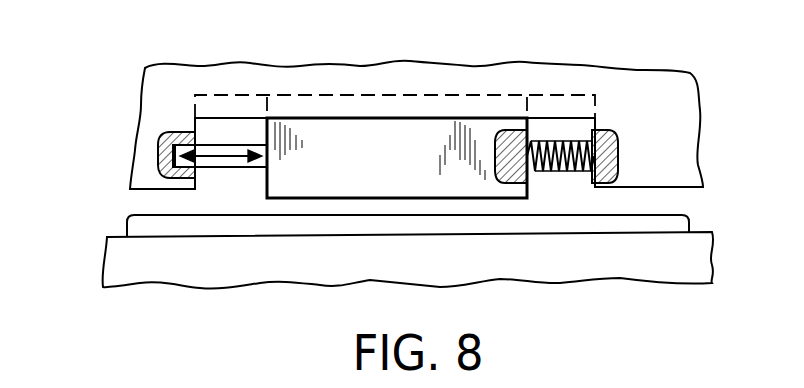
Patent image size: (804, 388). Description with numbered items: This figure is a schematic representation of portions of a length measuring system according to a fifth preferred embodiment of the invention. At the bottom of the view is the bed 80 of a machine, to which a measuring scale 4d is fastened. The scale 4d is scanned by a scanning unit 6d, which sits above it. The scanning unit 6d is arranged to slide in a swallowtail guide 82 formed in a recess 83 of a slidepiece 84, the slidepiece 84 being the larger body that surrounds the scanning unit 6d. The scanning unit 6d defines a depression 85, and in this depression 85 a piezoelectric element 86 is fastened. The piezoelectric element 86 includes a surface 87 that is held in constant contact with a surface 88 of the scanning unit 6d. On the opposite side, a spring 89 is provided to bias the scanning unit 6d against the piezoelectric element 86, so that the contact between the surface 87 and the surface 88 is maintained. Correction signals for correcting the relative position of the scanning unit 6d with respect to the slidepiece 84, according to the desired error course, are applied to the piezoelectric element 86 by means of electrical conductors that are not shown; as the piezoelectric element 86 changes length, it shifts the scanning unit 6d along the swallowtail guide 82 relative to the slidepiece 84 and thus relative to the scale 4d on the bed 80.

The swallowtail guide 82 is at (425, 105).
The slidepiece 84 is at (575, 82).
The recess 83 is at (160, 133).
The depression 85 is at (180, 154).
The piezoelectric element 86 is at (218, 168).
The surface of piezoelectric element 87 is at (267, 157).
The surface of scanning unit 88 is at (265, 178).
The scanning unit 6d is at (427, 182).
The bed 80 is at (512, 260).
The spring 89 is at (577, 172).
The measuring scale 4d is at (650, 225).